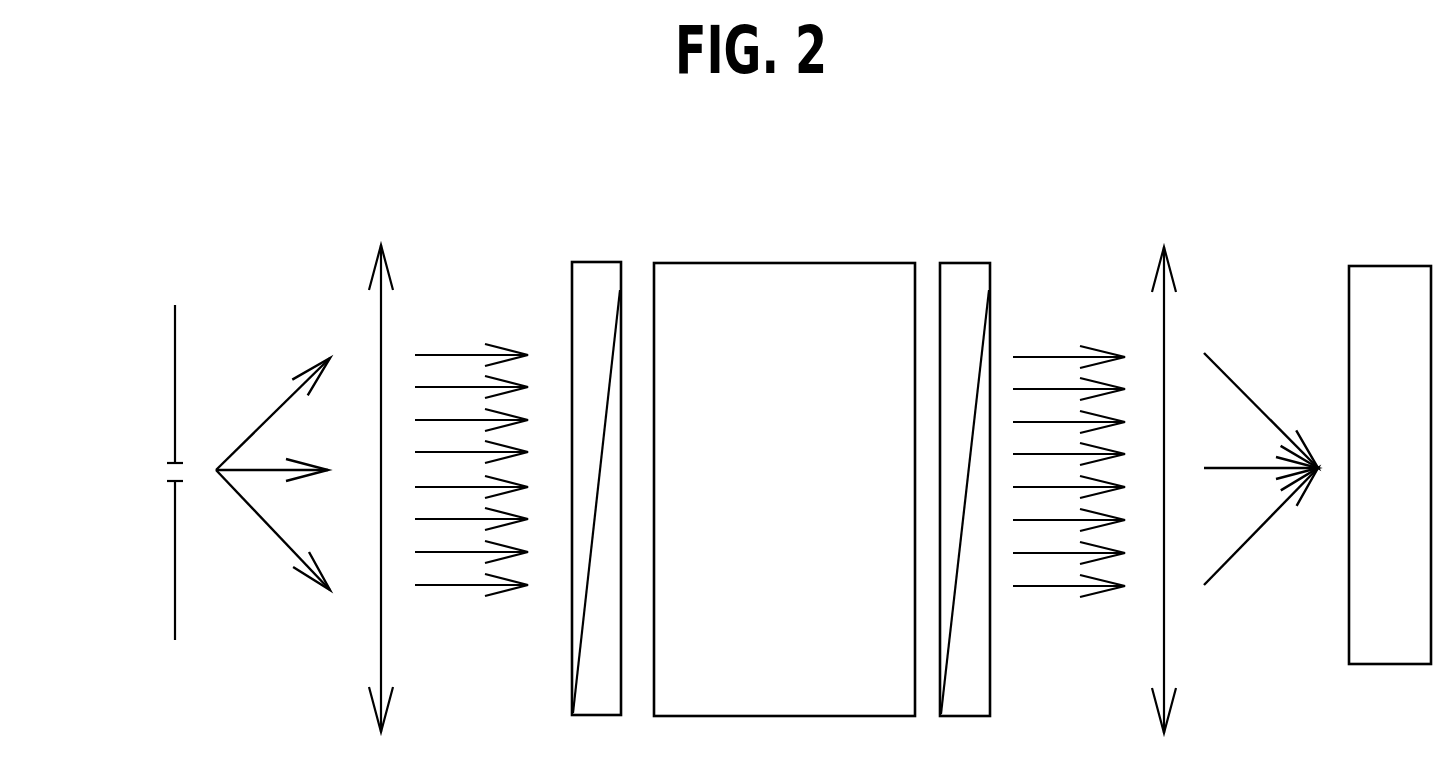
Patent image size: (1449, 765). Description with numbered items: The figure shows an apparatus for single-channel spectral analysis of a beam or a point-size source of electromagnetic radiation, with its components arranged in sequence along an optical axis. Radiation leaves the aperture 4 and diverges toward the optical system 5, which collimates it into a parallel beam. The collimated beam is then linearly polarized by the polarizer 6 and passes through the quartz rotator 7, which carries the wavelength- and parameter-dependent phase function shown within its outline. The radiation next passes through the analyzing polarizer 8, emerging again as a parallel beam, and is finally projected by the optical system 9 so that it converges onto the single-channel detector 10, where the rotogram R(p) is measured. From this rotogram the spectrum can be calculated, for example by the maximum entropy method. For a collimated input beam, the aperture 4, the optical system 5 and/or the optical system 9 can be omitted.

The aperture 4 is at (175, 345).
The optical system 5 is at (381, 345).
The polarizer 6 is at (588, 283).
The quartz rotator 7 is at (769, 279).
The analyzing polarizer 8 is at (958, 281).
The optical system 9 is at (1165, 348).
The single-channel detector 10 is at (1374, 281).